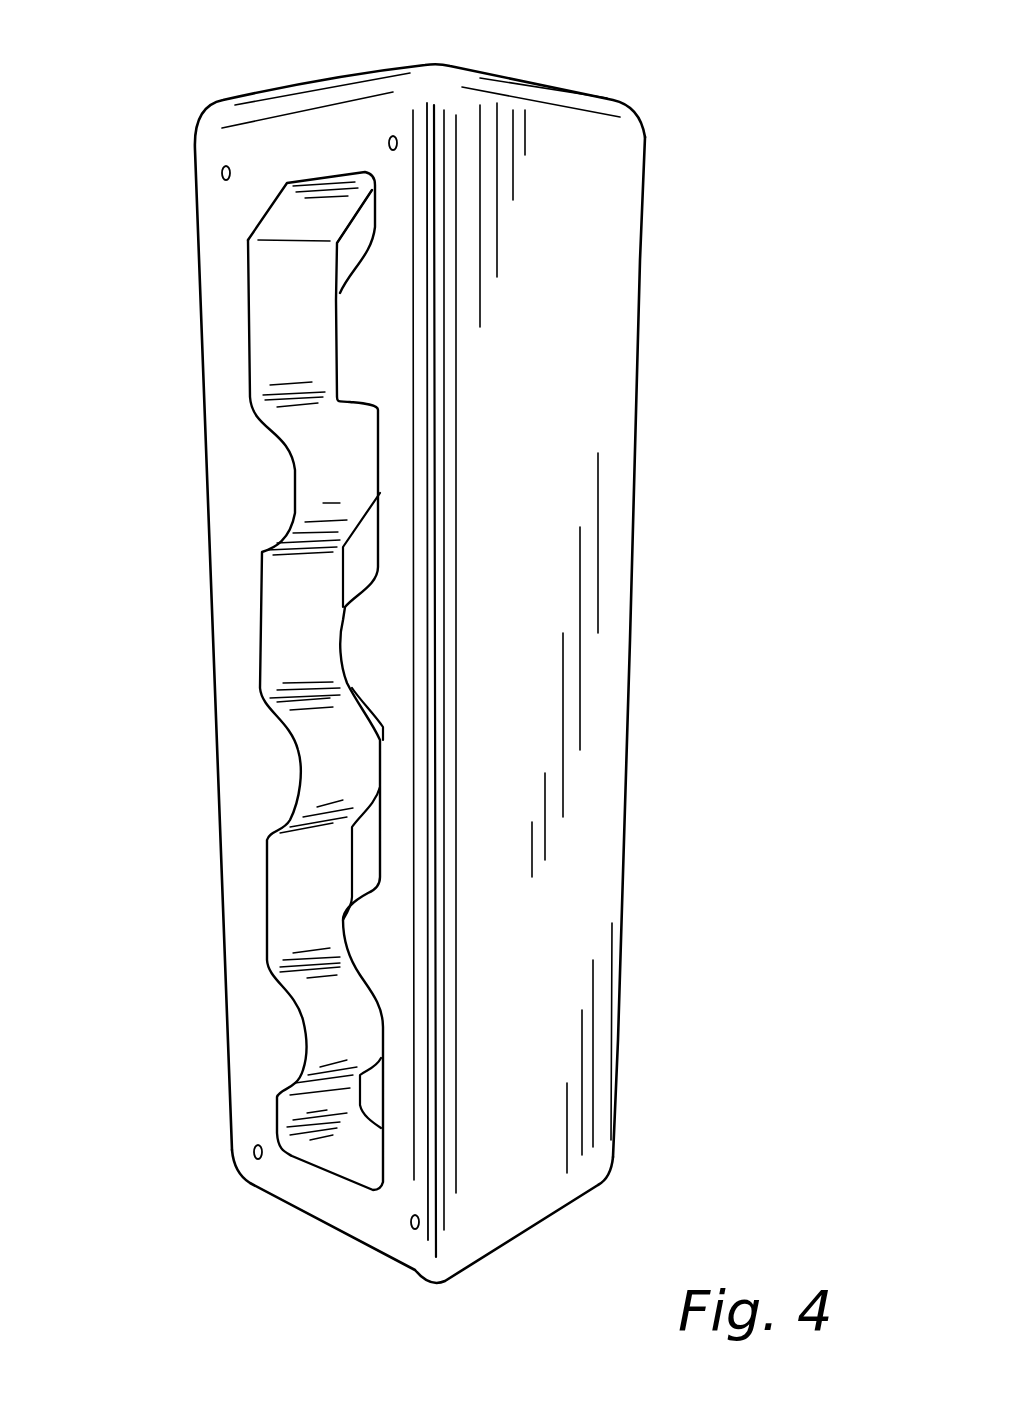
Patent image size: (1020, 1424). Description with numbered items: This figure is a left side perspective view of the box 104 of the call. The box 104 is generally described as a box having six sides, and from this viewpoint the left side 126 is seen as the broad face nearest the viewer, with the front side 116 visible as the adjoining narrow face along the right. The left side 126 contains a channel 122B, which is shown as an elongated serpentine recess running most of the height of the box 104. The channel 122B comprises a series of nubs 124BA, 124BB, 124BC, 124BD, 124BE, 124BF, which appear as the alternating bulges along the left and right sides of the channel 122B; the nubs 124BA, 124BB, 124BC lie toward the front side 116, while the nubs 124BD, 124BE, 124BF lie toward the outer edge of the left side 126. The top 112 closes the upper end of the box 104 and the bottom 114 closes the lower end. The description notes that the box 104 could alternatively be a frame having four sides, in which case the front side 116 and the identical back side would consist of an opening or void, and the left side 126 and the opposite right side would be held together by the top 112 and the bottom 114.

The box 104 is at (749, 127).
The top 112 is at (451, 64).
The bottom 114 is at (417, 1295).
The front side 116 is at (577, 903).
The channel 122B is at (384, 442).
The nub 124BA is at (350, 312).
The nub 124BB is at (375, 645).
The nub 124BC is at (368, 927).
The nub 124BD is at (270, 488).
The nub 124BE is at (273, 773).
The nub 124BF is at (292, 1050).
The left side 126 is at (242, 618).